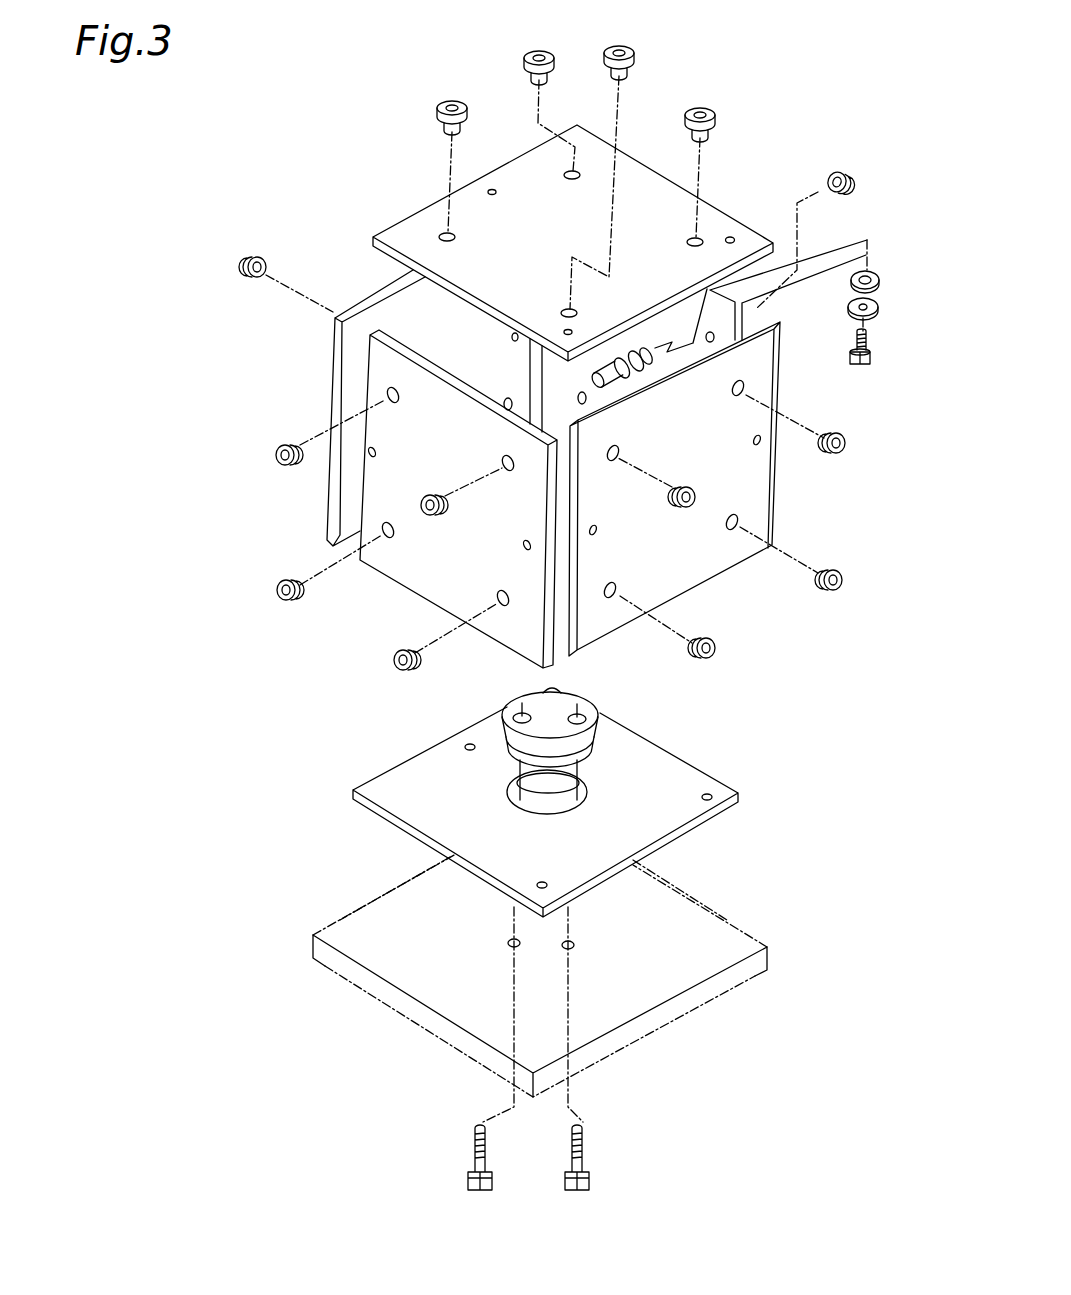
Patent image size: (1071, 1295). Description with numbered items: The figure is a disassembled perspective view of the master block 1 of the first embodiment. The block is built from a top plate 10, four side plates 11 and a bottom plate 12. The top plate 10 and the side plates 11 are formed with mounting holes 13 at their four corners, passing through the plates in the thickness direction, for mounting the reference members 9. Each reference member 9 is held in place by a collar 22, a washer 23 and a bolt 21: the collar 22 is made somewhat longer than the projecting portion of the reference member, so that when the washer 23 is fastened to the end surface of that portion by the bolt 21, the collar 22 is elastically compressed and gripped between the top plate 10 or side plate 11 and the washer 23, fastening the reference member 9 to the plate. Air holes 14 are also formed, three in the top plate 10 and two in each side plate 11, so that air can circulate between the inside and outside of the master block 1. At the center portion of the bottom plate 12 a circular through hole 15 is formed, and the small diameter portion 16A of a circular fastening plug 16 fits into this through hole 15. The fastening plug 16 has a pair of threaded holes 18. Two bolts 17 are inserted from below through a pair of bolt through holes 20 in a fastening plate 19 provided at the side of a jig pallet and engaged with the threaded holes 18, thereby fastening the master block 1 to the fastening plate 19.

The master block 1 is at (746, 604).
The reference member 9 is at (634, 44).
The top plate 10 is at (717, 217).
The side plate 11 is at (742, 293).
The bottom plate 12 is at (427, 767).
The mounting hole 13 is at (443, 233).
The air hole 14 is at (493, 188).
The through hole 15 is at (543, 807).
The fastening plug 16 is at (578, 700).
The small diameter portion 16A is at (602, 748).
The bolt 17 is at (466, 1167).
The threaded hole 18 is at (510, 713).
The fastening plate 19 is at (657, 993).
The bolt through hole 20 is at (506, 943).
The bolt 21 is at (865, 366).
The collar 22 is at (881, 277).
The washer 23 is at (876, 313).